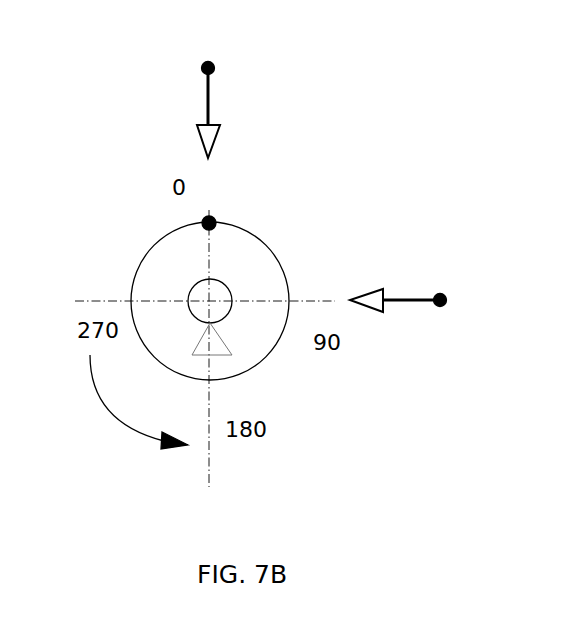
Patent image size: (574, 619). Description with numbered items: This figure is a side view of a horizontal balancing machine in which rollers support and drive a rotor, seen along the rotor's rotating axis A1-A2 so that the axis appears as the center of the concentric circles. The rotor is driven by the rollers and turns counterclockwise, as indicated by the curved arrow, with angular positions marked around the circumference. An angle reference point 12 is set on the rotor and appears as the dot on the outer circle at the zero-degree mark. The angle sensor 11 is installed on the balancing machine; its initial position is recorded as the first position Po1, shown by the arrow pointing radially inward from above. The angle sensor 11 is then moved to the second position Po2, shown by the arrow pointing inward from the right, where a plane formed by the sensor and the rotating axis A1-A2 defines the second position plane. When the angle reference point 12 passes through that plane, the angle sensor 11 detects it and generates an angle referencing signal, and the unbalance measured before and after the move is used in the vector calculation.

The angle sensor 11 is at (292, 168).
The angle reference point 12 is at (199, 197).
The first position Po1 is at (210, 89).
The second position Po2 is at (408, 275).
The rotating axis end point A1 is at (210, 301).
The rotating axis end point A2 is at (190, 317).